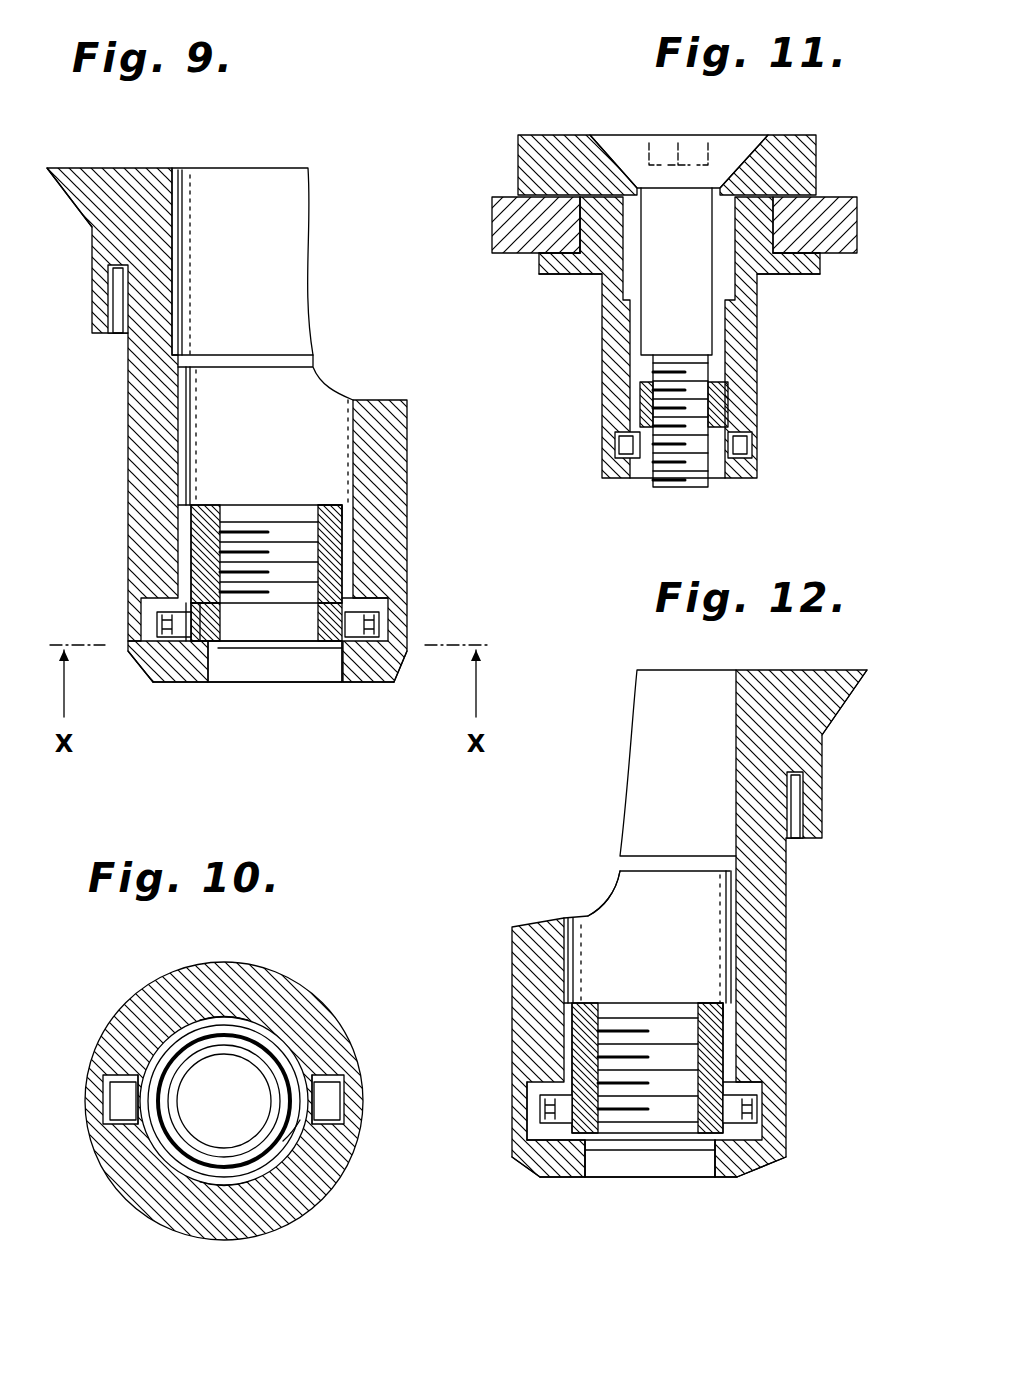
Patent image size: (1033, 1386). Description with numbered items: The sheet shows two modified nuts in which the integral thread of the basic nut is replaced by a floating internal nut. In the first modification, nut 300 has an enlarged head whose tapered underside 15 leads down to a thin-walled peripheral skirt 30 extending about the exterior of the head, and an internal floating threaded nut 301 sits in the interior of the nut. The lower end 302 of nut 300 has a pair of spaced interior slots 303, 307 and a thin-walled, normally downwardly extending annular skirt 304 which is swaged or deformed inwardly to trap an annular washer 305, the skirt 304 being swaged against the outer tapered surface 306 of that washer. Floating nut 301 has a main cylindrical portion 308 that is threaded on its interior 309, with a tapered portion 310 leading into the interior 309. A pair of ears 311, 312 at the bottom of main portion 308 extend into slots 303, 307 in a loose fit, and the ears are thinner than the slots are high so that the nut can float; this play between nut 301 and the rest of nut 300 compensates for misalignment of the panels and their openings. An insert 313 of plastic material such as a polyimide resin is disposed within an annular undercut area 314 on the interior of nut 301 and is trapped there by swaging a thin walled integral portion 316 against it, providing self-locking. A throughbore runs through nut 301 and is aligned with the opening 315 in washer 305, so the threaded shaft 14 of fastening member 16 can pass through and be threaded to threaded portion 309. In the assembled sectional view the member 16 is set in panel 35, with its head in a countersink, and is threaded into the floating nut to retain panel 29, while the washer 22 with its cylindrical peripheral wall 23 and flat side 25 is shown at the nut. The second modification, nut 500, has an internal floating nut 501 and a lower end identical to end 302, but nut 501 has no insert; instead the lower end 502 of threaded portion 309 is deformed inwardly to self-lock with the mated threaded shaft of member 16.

In FIG. 9, the cavity 14 is at (257, 197).
In FIG. 12, the cavity 14 is at (693, 707).
In FIG. 9, the underside of head 15 is at (70, 208).
In FIG. 12, the underside of head 15 is at (850, 703).
In FIG. 11, the threaded member 16 is at (691, 133).
In FIG. 11, the washer 22 is at (542, 260).
In FIG. 11, the cylindrical peripheral wall 23 is at (812, 258).
In FIG. 11, the flat side 25 is at (544, 249).
In FIG. 11, the panel 29 is at (833, 200).
In FIG. 9, the peripheral skirt 30 is at (88, 310).
In FIG. 12, the peripheral skirt 30 is at (822, 805).
In FIG. 11, the panel 35 is at (540, 155).
In FIG. 9, the nut 300 is at (326, 236).
In FIG. 9, the internal floating threaded nut 301 is at (290, 482).
In FIG. 11, the internal floating threaded nut 301 is at (712, 384).
In FIG. 9, the lower end of nut 302 is at (407, 418).
In FIG. 11, the lower end of nut 302 is at (604, 370).
In FIG. 12, the lower end of nut 302 is at (513, 933).
In FIG. 10, the lower end of nut 302 is at (158, 1228).
In FIG. 9, the interior slot 303 is at (370, 596).
In FIG. 12, the interior slot 303 is at (770, 1082).
In FIG. 10, the interior slot 303 is at (337, 1103).
In FIG. 9, the annular skirt 304 is at (397, 676).
In FIG. 12, the annular skirt 304 is at (770, 1165).
In FIG. 9, the annular washer 305 is at (311, 640).
In FIG. 12, the annular washer 305 is at (727, 1180).
In FIG. 9, the outer tapered surface 306 is at (164, 677).
In FIG. 12, the outer tapered surface 306 is at (557, 1178).
In FIG. 9, the interior slot 307 is at (153, 620).
In FIG. 12, the interior slot 307 is at (533, 1133).
In FIG. 10, the interior slot 307 is at (112, 1122).
In FIG. 9, the main cylindrical portion 308 is at (191, 514).
In FIG. 12, the main cylindrical portion 308 is at (572, 1013).
In FIG. 10, the main cylindrical portion 308 is at (224, 1191).
In FIG. 9, the threaded interior 309 is at (243, 533).
In FIG. 11, the threaded interior 309 is at (697, 409).
In FIG. 12, the threaded interior 309 is at (660, 1033).
In FIG. 10, the threaded interior 309 is at (258, 1052).
In FIG. 9, the tapered portion 310 is at (330, 507).
In FIG. 12, the tapered portion 310 is at (698, 1003).
In FIG. 9, the ear 311 is at (177, 610).
In FIG. 11, the ear 311 is at (605, 440).
In FIG. 12, the ear 311 is at (543, 1107).
In FIG. 10, the ear 311 is at (122, 1085).
In FIG. 9, the ear 312 is at (373, 620).
In FIG. 11, the ear 312 is at (752, 440).
In FIG. 12, the ear 312 is at (758, 1100).
In FIG. 10, the ear 312 is at (325, 1085).
In FIG. 9, the insert 313 is at (232, 655).
In FIG. 10, the insert 313 is at (207, 1034).
In FIG. 9, the annular undercut area 314 is at (255, 669).
In FIG. 12, the annular undercut area 314 is at (690, 1160).
In FIG. 9, the opening 315 is at (248, 679).
In FIG. 11, the opening 315 is at (722, 479).
In FIG. 12, the opening 315 is at (635, 1163).
In FIG. 9, the thin walled integral portion 316 is at (208, 679).
In FIG. 10, the thin walled integral portion 316 is at (298, 1145).
In FIG. 12, the nut 500 is at (617, 777).
In FIG. 12, the internal floating nut 501 is at (628, 990).
In FIG. 12, the lower end of internal threaded portion 502 is at (597, 1173).